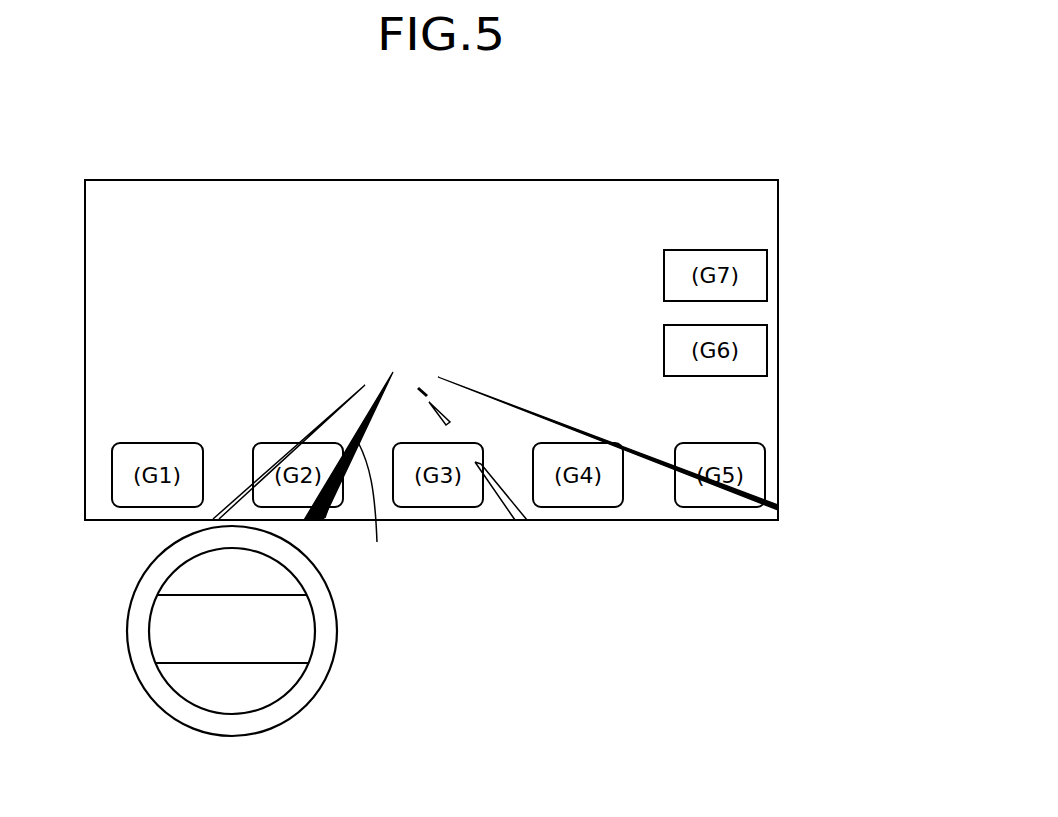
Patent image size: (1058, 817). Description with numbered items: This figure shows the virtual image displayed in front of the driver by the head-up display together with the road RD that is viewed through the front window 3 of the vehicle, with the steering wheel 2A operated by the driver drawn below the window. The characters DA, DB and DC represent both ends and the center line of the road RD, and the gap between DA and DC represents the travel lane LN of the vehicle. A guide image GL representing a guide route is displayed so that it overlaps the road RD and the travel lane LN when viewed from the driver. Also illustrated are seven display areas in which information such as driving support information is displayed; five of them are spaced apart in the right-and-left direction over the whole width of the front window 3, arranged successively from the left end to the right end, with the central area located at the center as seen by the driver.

The front window 3 is at (677, 180).
The steering wheel 2A is at (127, 627).
The road RD is at (292, 253).
The end of road DA is at (343, 405).
The travel lane LN is at (402, 398).
The center line of road DC is at (423, 385).
The end of road DB is at (502, 397).
The guide image GL is at (377, 507).